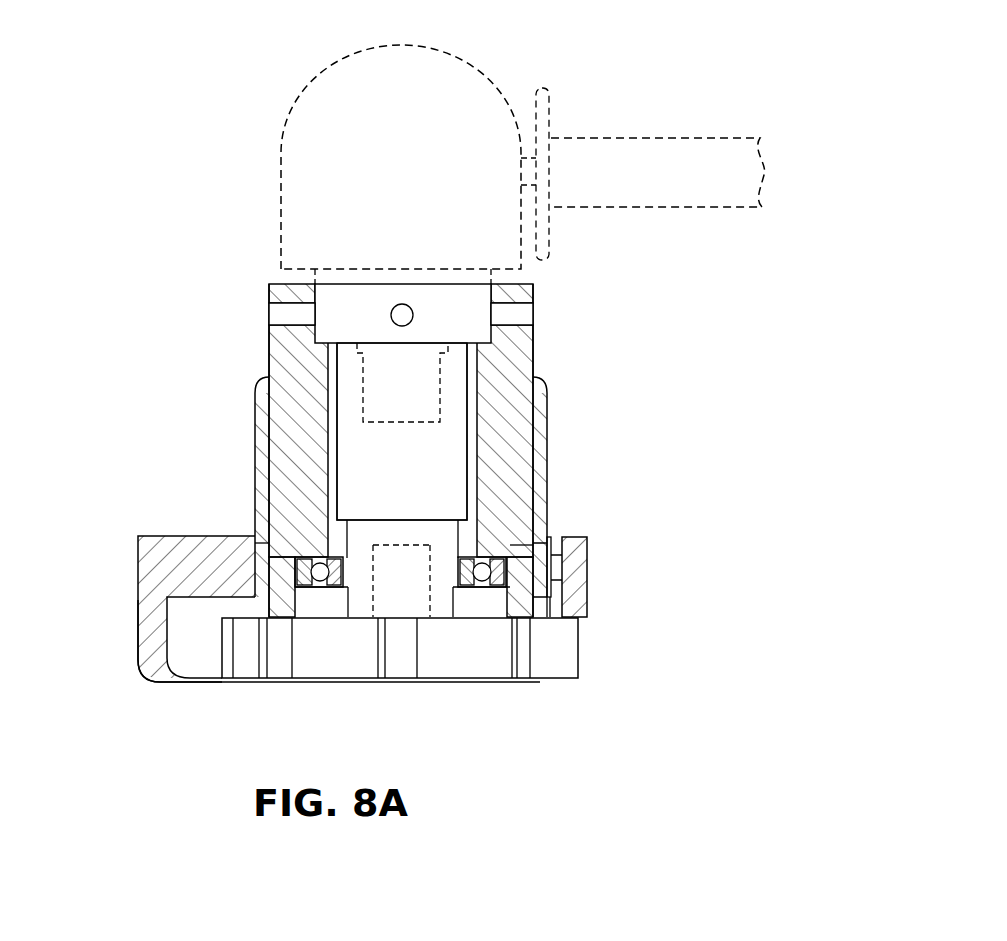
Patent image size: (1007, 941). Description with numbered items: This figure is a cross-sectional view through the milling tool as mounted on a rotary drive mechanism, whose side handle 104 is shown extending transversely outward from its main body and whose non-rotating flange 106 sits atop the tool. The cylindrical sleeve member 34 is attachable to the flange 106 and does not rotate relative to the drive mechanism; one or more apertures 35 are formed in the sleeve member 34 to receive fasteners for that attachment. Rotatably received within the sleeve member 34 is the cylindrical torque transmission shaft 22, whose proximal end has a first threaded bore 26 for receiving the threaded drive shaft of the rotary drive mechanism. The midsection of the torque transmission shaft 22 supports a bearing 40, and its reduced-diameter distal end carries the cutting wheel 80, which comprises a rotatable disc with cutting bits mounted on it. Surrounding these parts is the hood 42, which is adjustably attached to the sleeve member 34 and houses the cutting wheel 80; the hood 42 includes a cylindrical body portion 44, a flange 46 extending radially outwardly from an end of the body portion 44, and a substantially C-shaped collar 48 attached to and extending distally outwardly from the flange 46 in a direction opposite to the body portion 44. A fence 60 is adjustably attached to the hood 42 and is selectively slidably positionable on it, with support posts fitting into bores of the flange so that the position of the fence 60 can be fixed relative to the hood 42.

The side handle 104 is at (668, 137).
The flange 106 is at (318, 275).
The sleeve member 34 is at (545, 320).
The apertures 35 is at (283, 321).
The first threaded bore 26 is at (441, 396).
The torque transmission shaft 22 is at (421, 492).
The hood 42 is at (233, 455).
The cylindrical body portion 44 is at (548, 450).
The flange 46 is at (210, 535).
The C-shaped collar 48 is at (137, 637).
The bearing 40 is at (466, 592).
The fence 60 is at (588, 558).
The cutting wheel 80 is at (584, 660).